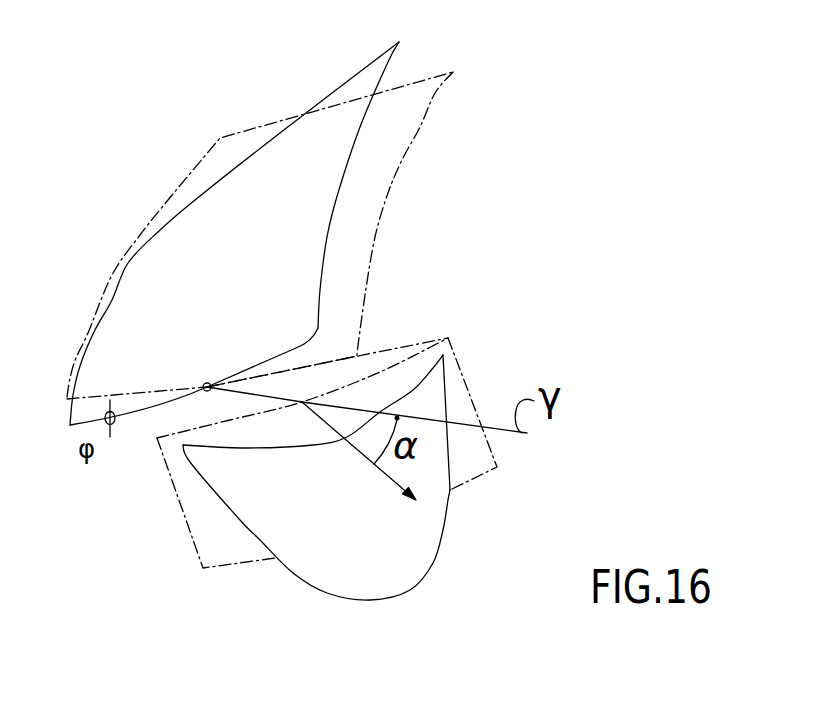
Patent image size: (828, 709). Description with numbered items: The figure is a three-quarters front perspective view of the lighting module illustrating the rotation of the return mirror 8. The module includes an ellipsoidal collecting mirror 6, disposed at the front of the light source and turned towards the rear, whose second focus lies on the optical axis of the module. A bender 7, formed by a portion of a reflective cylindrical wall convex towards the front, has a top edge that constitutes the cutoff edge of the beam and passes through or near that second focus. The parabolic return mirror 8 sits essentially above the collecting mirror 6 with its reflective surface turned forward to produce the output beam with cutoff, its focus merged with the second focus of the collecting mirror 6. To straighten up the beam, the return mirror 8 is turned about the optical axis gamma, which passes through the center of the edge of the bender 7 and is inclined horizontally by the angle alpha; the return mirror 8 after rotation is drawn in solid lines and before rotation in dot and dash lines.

The collecting mirror 6 is at (303, 558).
The bender 7 is at (205, 535).
The return mirror 8 is at (153, 278).